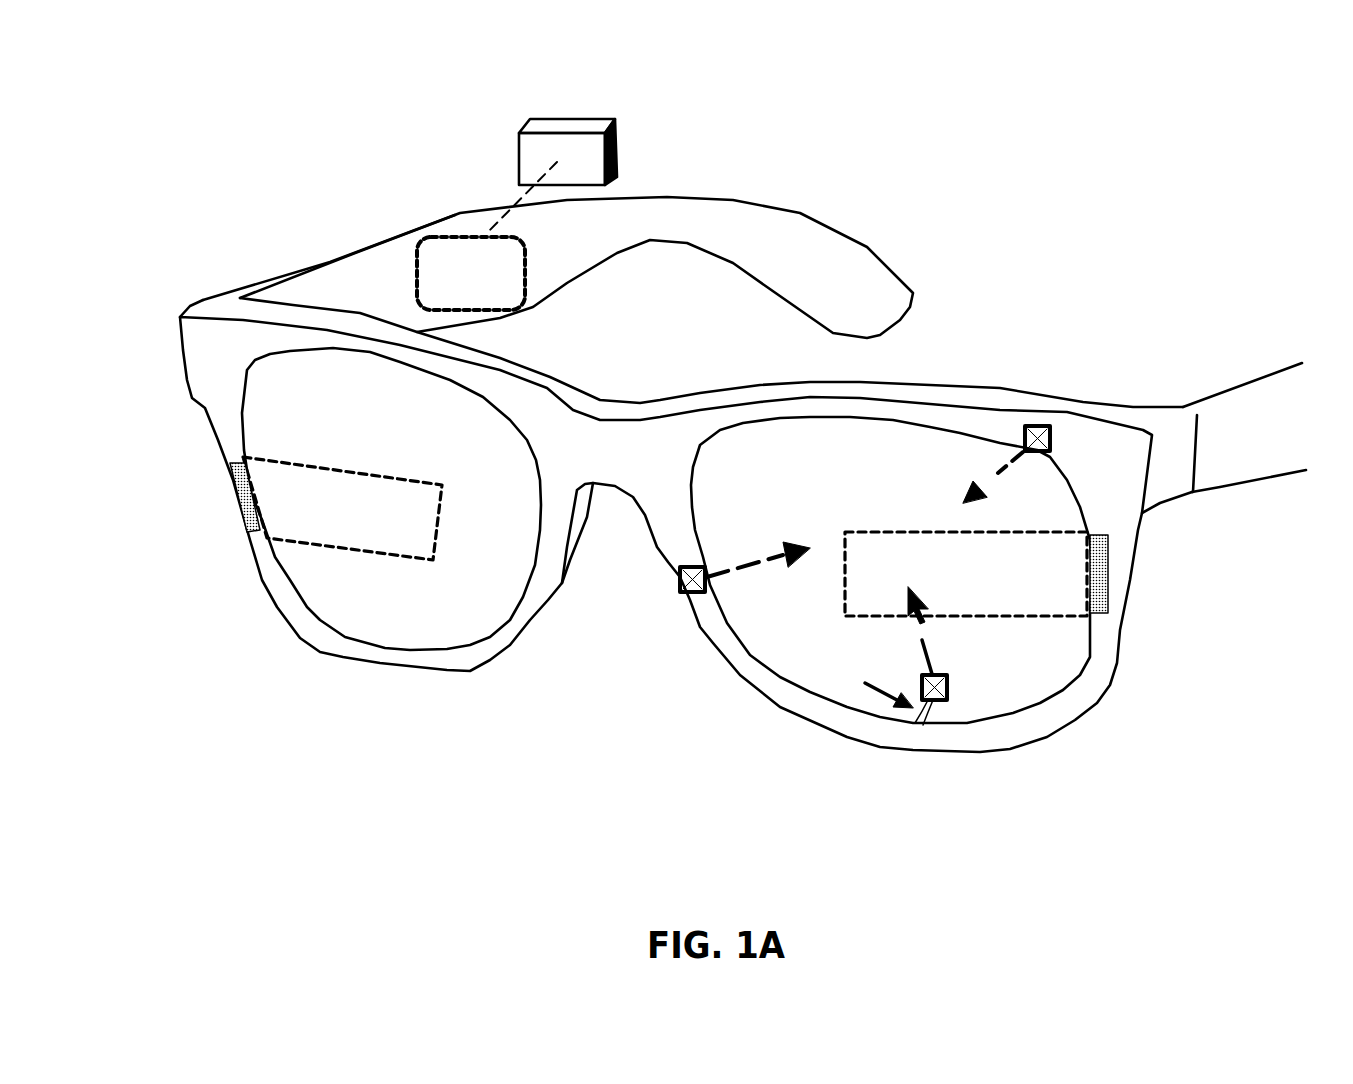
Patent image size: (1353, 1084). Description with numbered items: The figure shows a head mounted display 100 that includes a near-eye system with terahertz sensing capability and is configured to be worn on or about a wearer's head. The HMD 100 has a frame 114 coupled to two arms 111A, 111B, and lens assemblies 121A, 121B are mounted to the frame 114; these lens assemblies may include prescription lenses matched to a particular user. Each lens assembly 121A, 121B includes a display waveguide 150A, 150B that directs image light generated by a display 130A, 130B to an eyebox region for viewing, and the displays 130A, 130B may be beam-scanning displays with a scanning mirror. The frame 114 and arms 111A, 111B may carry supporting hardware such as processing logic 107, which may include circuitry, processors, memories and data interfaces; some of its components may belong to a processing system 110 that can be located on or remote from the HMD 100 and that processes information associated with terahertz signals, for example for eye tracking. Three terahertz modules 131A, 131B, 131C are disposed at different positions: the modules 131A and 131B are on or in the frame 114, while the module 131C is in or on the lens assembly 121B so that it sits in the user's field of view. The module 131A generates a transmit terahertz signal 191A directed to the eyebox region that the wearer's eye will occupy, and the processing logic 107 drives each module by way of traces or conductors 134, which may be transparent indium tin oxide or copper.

The head mounted display 100 is at (1265, 66).
The processing system 110 is at (618, 143).
The processing logic 107 is at (485, 298).
The arm 111A is at (627, 239).
The arm 111B is at (1265, 450).
The frame 114 is at (230, 360).
The lens assembly 121A is at (508, 541).
The lens assembly 121B is at (815, 453).
The display 130A is at (247, 503).
The display 130B is at (1108, 578).
The terahertz module 131A is at (1048, 432).
The terahertz module 131B is at (680, 587).
The terahertz module 131C is at (945, 698).
The traces/conductors 134 is at (870, 686).
The display waveguide 150A is at (277, 460).
The display waveguide 150B is at (1083, 618).
The transmit terahertz signal 191A is at (1003, 466).